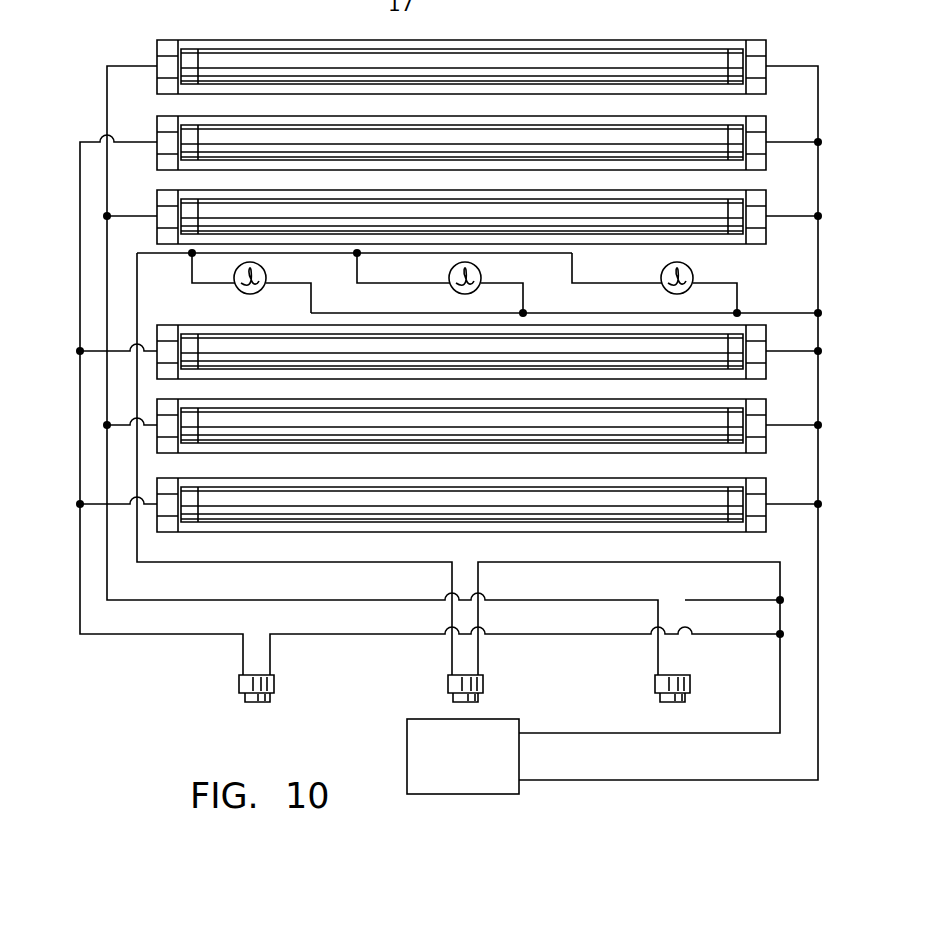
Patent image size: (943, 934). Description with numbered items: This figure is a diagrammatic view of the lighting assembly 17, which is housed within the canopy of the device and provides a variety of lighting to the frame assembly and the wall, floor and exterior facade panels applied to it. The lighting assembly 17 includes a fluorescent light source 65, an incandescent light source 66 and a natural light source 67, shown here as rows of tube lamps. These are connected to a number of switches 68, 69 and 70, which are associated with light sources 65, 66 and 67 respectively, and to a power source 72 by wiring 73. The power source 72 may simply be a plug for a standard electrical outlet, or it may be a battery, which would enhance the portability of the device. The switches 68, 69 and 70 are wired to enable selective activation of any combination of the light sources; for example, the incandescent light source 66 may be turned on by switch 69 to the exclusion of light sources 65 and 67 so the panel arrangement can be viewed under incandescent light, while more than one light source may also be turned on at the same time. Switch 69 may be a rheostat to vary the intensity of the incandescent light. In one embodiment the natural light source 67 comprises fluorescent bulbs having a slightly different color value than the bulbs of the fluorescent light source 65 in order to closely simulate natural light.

The lighting assembly 17 is at (70, 148).
The fluorescent light source 65 is at (205, 117).
The incandescent light source 66 is at (248, 294).
The natural light source 67 is at (218, 40).
The switch 68 is at (255, 702).
The switch 69 is at (468, 702).
The switch 70 is at (673, 702).
The power source 72 is at (500, 794).
The wiring 73 is at (818, 112).